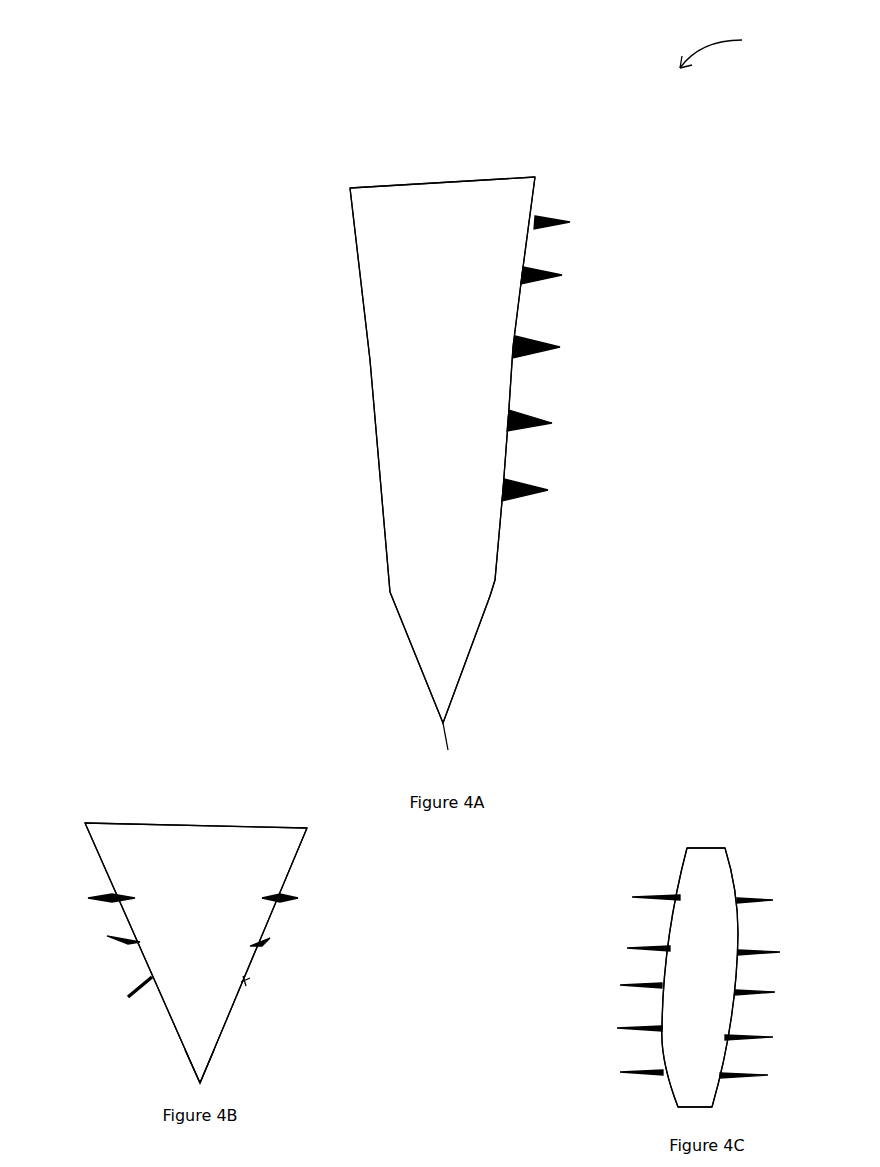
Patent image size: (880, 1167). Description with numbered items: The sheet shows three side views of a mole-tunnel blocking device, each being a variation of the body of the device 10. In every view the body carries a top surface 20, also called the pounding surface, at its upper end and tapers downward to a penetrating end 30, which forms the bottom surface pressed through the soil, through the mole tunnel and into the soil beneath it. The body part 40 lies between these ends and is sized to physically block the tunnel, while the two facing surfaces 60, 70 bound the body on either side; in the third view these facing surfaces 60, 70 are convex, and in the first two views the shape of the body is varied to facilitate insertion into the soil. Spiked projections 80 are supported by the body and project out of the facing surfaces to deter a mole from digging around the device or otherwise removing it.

In FIG. 4A, the body of the device 10 is at (730, 45).
In FIG. 4A, the top surface 20 is at (436, 173).
In FIG. 4B, the top surface 20 is at (188, 815).
In FIG. 4C, the top surface 20 is at (707, 843).
In FIG. 4A, the penetrating end 30 is at (440, 687).
In FIG. 4B, the penetrating end 30 is at (195, 1077).
In FIG. 4C, the penetrating end 30 is at (680, 1097).
In FIG. 4A, the body part 40 is at (503, 207).
In FIG. 4B, the body part 40 is at (125, 855).
In FIG. 4C, the body part 40 is at (697, 881).
In FIG. 4A, the convex facing surface 60 is at (521, 315).
In FIG. 4B, the convex facing surface 60 is at (270, 922).
In FIG. 4C, the convex facing surface 60 is at (740, 935).
In FIG. 4A, the convex facing surface 70 is at (368, 333).
In FIG. 4B, the convex facing surface 70 is at (128, 921).
In FIG. 4C, the convex facing surface 70 is at (675, 925).
In FIG. 4A, the spiked projections 80 is at (560, 276).
In FIG. 4B, the spiked projections 80 is at (300, 898).
In FIG. 4C, the spiked projections 80 is at (775, 900).